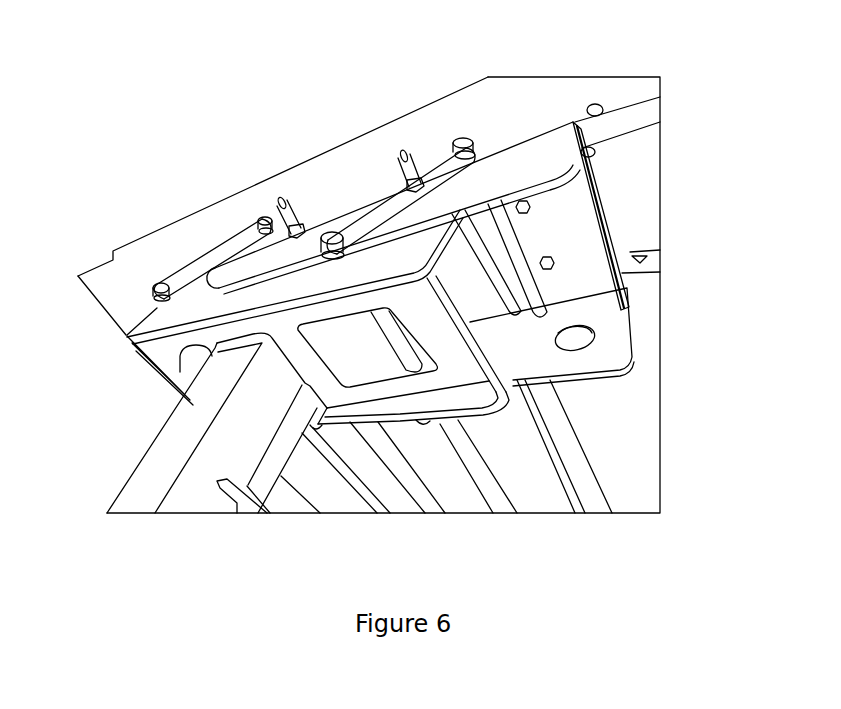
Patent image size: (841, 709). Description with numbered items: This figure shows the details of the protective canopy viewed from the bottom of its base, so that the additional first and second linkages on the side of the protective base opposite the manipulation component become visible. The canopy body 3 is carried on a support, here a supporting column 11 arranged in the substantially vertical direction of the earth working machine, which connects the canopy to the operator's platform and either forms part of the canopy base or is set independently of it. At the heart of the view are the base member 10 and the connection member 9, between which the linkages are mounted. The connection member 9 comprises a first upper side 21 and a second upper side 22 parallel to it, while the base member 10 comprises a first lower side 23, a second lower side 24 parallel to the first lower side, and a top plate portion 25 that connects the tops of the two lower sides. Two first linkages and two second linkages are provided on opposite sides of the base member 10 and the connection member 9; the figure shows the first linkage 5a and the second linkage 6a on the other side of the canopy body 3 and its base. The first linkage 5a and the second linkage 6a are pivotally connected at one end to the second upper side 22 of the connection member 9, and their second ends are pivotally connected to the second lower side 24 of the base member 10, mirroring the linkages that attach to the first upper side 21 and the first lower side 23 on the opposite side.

The canopy body 3 is at (163, 245).
The first linkage 5a is at (440, 180).
The second linkage 6a is at (225, 246).
The connection member 9 is at (578, 250).
The base member 10 is at (307, 281).
The supporting column 11 is at (162, 452).
The first upper side 21 is at (613, 333).
The second upper side 22 is at (533, 160).
The first lower side 23 is at (480, 407).
The second lower side 24 is at (383, 255).
The top plate portion 25 is at (469, 286).